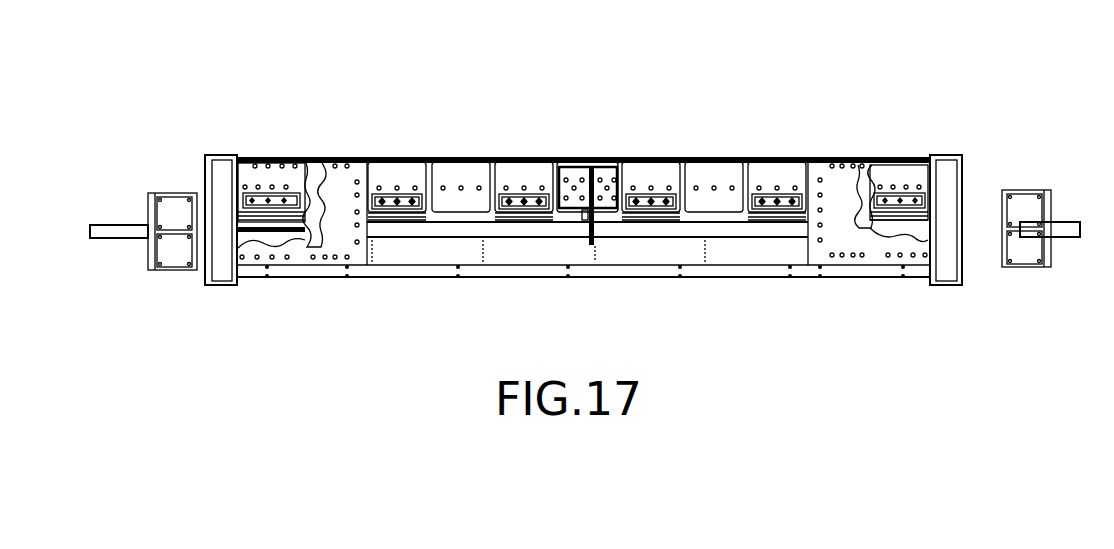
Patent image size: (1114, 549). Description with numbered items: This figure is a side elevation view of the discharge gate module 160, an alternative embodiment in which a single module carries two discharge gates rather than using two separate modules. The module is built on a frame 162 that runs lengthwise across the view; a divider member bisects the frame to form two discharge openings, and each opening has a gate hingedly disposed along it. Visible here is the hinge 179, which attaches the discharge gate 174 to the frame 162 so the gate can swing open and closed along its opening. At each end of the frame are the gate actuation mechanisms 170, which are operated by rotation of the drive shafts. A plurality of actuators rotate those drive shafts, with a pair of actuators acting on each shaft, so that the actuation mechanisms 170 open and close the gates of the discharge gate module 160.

The discharge gate module 160 is at (728, 76).
The frame 162 is at (848, 156).
The gate actuation mechanism 170 is at (222, 300).
The discharge gate 174 is at (632, 248).
The hinge 179 is at (480, 217).